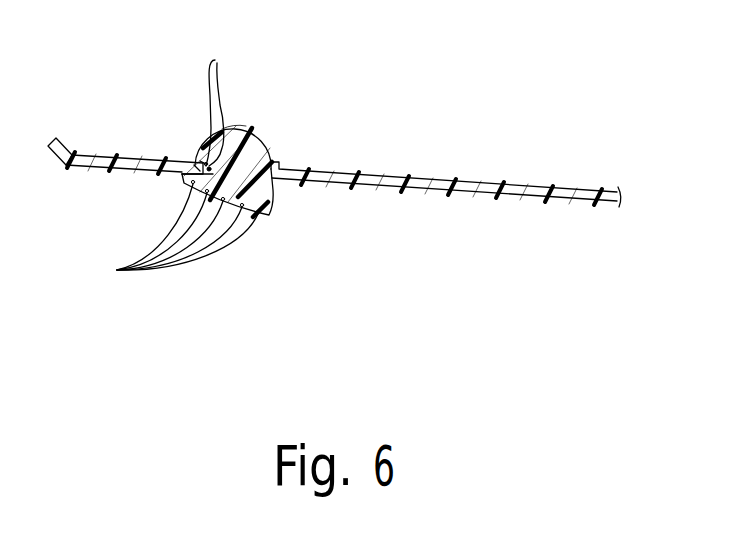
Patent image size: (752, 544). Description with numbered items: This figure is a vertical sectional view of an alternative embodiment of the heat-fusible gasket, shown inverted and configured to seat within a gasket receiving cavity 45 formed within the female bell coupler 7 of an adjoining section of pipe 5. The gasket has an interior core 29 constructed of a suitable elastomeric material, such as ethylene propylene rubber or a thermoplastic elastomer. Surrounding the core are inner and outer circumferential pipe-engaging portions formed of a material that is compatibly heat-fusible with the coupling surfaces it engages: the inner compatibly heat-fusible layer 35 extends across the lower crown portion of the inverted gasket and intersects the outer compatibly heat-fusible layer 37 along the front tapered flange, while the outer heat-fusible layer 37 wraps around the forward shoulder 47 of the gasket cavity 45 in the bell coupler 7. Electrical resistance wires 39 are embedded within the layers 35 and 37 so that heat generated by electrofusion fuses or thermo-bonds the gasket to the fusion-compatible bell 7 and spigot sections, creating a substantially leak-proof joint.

The pipe 5 is at (406, 149).
The bell coupler 7 is at (514, 186).
The interior core 29 is at (246, 156).
The inner compatibly heat-fusible layer 35 is at (265, 215).
The outer compatibly heat-fusible layer 37 is at (203, 163).
The electrical resistance wires 39 is at (117, 270).
The gasket receiving cavity 45 is at (233, 128).
The forward shoulder 47 is at (198, 167).